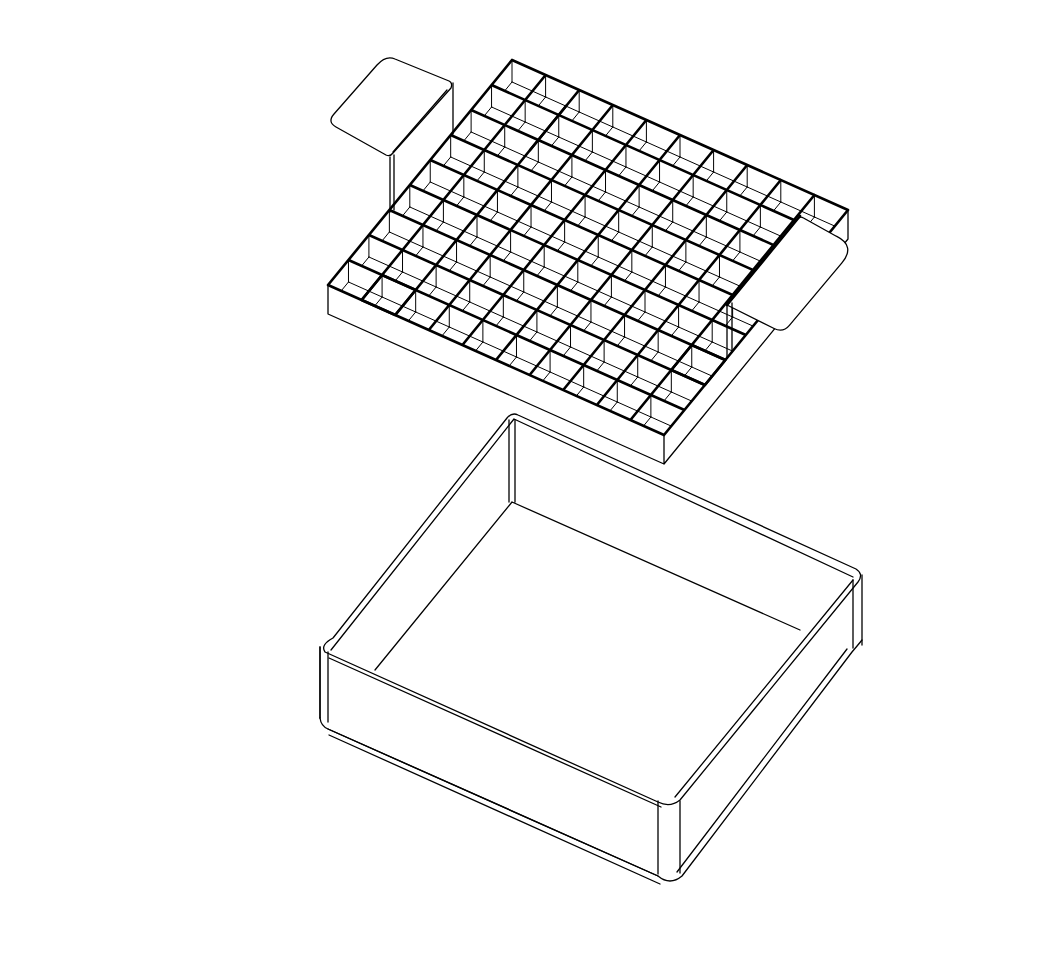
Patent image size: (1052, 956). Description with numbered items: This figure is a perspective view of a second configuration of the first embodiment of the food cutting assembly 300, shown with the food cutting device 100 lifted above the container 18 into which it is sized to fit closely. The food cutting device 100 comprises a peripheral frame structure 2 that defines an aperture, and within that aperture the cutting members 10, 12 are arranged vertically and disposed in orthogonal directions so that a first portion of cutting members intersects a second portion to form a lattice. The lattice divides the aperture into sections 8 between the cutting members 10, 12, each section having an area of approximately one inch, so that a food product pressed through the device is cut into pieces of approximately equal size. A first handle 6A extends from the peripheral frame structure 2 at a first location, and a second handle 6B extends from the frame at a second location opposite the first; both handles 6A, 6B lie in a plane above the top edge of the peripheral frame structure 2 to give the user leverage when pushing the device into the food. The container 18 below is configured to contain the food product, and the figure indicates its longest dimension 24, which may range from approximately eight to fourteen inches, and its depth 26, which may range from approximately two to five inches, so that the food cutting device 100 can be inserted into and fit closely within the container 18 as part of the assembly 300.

The food cutting assembly 300 is at (1043, 108).
The food cutting device 100 is at (220, 426).
The peripheral frame structure 2 is at (767, 169).
The sections 8 is at (703, 376).
The cutting member 10 is at (395, 300).
The cutting member 12 is at (558, 130).
The first handle 6A is at (344, 88).
The second handle 6B is at (811, 300).
The container 18 is at (879, 613).
The longest dimension 24 is at (324, 741).
The depth 26 is at (310, 748).